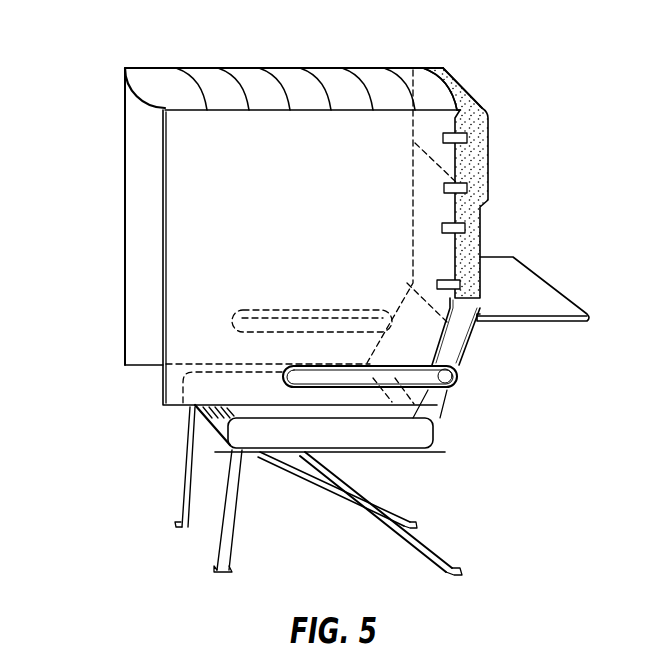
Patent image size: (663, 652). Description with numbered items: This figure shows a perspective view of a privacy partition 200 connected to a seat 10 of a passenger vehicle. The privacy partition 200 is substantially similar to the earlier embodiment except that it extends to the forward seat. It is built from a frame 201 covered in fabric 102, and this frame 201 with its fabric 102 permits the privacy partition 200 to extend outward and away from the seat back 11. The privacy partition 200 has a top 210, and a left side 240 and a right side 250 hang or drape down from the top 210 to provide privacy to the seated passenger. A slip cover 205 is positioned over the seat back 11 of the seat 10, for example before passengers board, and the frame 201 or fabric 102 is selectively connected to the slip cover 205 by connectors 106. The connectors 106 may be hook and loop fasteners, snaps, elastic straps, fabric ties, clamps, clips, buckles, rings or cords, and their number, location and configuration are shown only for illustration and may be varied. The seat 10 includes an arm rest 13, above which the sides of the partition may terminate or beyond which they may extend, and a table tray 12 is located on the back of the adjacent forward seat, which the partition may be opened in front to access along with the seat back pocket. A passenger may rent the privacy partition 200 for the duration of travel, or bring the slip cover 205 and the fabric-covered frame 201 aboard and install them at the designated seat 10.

The privacy partition 200 is at (520, 50).
The fabric 102 is at (303, 80).
The frame 201 is at (238, 78).
The top 210 is at (387, 82).
The right side 250 is at (125, 135).
The left side 240 is at (188, 300).
The slip cover 205 is at (487, 180).
The connector 106 is at (467, 137).
The table tray 12 is at (543, 292).
The arm rest 13 is at (453, 381).
The seat back 11 is at (430, 410).
The seat 10 is at (380, 438).